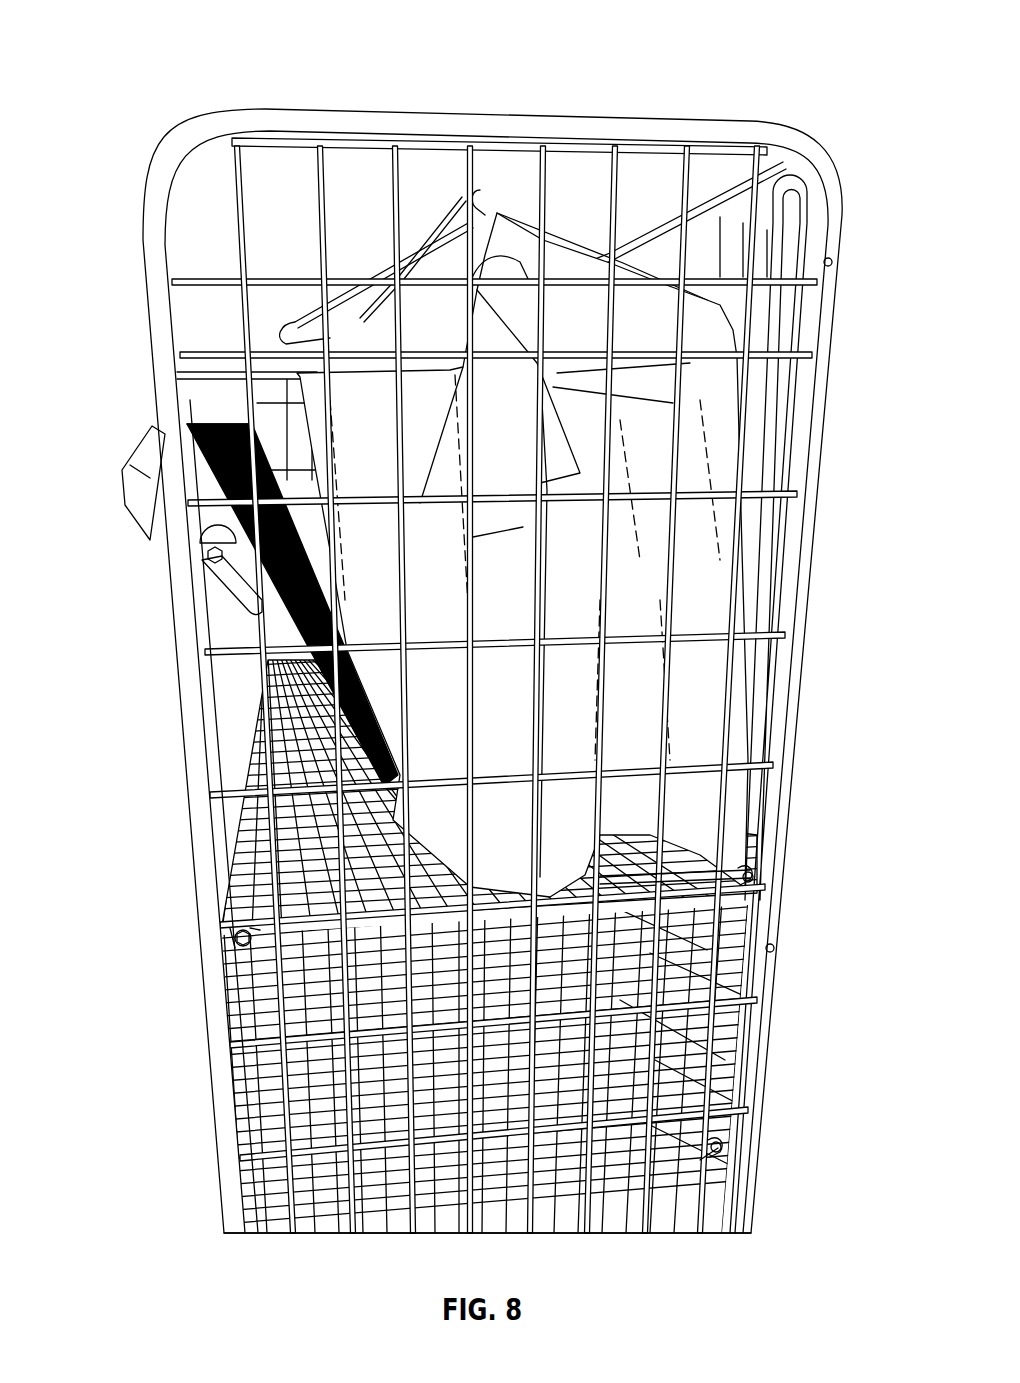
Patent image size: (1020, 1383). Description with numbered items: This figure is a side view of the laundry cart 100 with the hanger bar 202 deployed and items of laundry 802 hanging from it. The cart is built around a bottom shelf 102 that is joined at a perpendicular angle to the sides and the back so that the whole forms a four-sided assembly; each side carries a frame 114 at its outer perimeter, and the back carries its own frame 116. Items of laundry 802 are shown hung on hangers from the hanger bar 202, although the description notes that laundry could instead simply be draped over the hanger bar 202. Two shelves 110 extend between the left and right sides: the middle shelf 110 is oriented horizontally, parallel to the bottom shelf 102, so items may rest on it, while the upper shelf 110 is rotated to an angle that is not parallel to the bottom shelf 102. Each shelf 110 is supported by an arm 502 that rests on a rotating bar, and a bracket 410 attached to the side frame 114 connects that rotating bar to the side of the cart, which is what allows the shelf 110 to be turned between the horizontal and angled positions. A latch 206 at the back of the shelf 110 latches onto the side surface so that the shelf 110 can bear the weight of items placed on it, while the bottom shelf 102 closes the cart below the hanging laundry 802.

The laundry cart 100 is at (212, 42).
The bottom shelf 102 is at (643, 1068).
The shelf 110 is at (155, 437).
The frame 114 is at (152, 232).
The frame 116 is at (737, 188).
The hanger bar 202 is at (470, 177).
The latch 206 is at (748, 877).
The bracket 410 is at (240, 553).
The arm 502 is at (145, 498).
The laundry 802 is at (703, 433).